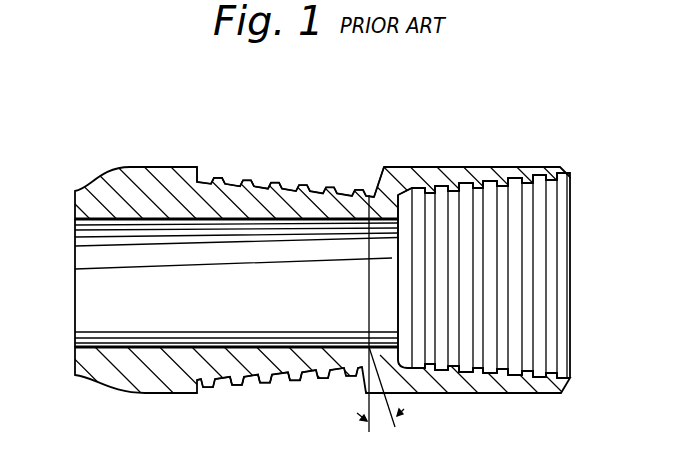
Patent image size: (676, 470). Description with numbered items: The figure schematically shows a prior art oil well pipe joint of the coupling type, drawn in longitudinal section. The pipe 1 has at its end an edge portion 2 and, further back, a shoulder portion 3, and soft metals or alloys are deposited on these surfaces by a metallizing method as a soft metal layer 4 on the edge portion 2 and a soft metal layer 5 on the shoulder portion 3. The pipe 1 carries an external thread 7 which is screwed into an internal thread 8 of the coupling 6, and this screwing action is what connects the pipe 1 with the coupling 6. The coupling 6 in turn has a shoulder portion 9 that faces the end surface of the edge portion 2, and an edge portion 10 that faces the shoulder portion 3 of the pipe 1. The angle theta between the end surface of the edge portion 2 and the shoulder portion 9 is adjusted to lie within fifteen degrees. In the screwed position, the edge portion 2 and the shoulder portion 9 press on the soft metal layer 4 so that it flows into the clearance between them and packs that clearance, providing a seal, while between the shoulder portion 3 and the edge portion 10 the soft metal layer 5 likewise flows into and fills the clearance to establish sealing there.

The pipe 1 is at (98, 165).
The edge portion 2 is at (346, 221).
The shoulder portion 3 is at (172, 177).
The soft metal layer 4 is at (382, 200).
The soft metal layer 5 is at (199, 178).
The coupling 6 is at (466, 182).
The external thread 7 is at (296, 370).
The internal thread 8 is at (271, 392).
The shoulder portion 9 is at (372, 190).
The edge portion 10 is at (214, 177).